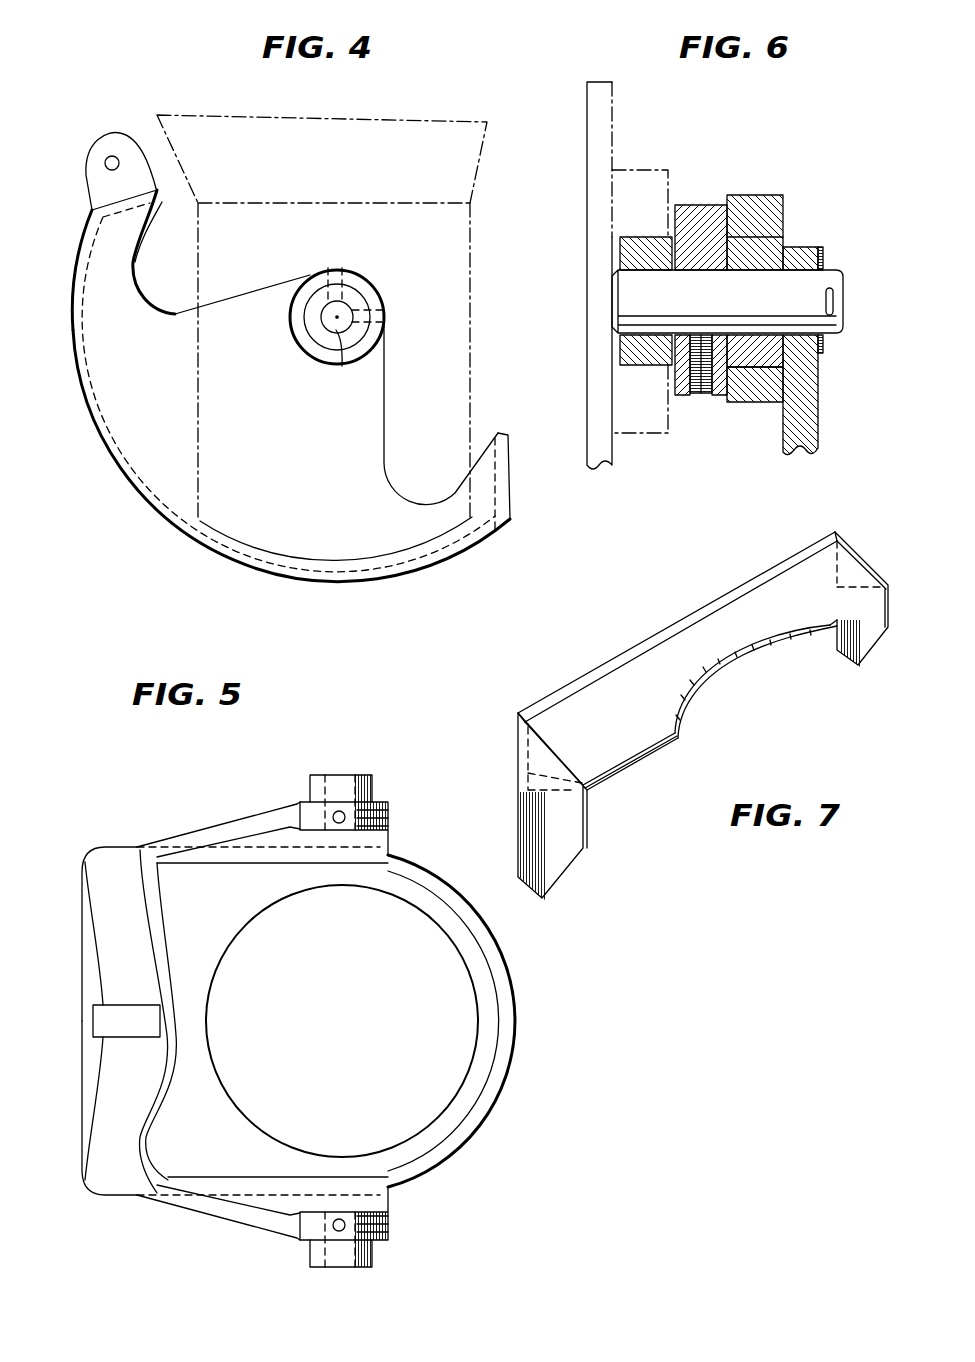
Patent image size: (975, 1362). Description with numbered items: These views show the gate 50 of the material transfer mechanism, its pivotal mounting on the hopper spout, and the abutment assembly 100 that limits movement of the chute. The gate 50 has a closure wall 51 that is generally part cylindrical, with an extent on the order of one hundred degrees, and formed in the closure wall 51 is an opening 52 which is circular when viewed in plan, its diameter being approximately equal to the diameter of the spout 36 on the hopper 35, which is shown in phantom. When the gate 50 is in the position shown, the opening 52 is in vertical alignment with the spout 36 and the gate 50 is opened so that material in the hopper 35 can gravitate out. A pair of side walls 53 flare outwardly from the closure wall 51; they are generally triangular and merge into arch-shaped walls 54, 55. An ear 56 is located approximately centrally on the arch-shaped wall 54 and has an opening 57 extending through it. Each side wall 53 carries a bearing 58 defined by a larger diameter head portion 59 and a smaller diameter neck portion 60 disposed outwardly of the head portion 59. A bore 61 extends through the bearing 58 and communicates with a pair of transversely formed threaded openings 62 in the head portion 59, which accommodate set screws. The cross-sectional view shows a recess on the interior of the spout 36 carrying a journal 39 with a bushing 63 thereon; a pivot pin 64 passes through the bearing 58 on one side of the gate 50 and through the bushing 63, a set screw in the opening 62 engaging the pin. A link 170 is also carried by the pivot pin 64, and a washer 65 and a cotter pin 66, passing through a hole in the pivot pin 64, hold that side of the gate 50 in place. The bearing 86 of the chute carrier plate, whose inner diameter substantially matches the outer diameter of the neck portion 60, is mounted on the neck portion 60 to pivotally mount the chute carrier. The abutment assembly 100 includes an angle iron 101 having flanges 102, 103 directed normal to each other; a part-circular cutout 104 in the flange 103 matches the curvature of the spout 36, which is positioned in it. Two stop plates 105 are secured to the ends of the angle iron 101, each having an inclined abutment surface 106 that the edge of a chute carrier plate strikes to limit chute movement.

In FIG. 4, the hopper 35 is at (398, 140).
In FIG. 6, the hopper 35 is at (607, 115).
In FIG. 4, the spout 36 is at (462, 270).
In FIG. 6, the journal 39 is at (653, 180).
In FIG. 4, the gate 50 is at (386, 392).
In FIG. 5, the gate 50 is at (413, 802).
In FIG. 4, the closure wall 51 is at (128, 483).
In FIG. 5, the closure wall 51 is at (196, 912).
In FIG. 4, the opening 52 is at (203, 557).
In FIG. 5, the opening 52 is at (248, 923).
In FIG. 4, the side walls 53 is at (300, 430).
In FIG. 5, the side walls 53 is at (275, 835).
In FIG. 4, the arch-shaped wall 54 is at (510, 480).
In FIG. 5, the arch-shaped wall 54 is at (510, 993).
In FIG. 4, the arch-shaped wall 55 is at (90, 232).
In FIG. 5, the arch-shaped wall 55 is at (122, 963).
In FIG. 4, the ear 56 is at (135, 155).
In FIG. 5, the ear 56 is at (108, 1030).
In FIG. 4, the opening 57 is at (110, 156).
In FIG. 4, the bearing 58 is at (368, 277).
In FIG. 6, the bearing 58 is at (722, 400).
In FIG. 5, the bearing 58 is at (374, 788).
In FIG. 4, the head portion 59 is at (352, 272).
In FIG. 6, the head portion 59 is at (705, 212).
In FIG. 5, the head portion 59 is at (310, 800).
In FIG. 4, the neck portion 60 is at (355, 300).
In FIG. 6, the neck portion 60 is at (782, 245).
In FIG. 5, the neck portion 60 is at (316, 785).
In FIG. 4, the bore 61 is at (343, 356).
In FIG. 5, the bore 61 is at (332, 793).
In FIG. 4, the threaded openings 62 is at (333, 265).
In FIG. 6, the threaded openings 62 is at (702, 397).
In FIG. 5, the threaded openings 62 is at (345, 823).
In FIG. 6, the bushing 63 is at (643, 247).
In FIG. 6, the pivot pin 64 is at (830, 272).
In FIG. 6, the washer 65 is at (825, 343).
In FIG. 6, the cotter pin 66 is at (833, 300).
In FIG. 6, the bearing 86 is at (765, 387).
In FIG. 6, the link 170 is at (797, 252).
In FIG. 7, the abutment assembly 100 is at (570, 630).
In FIG. 7, the angle iron 101 is at (604, 661).
In FIG. 7, the flange 102 is at (673, 637).
In FIG. 7, the flange 103 is at (622, 733).
In FIG. 7, the part-circular cutout 104 is at (735, 655).
In FIG. 7, the stop plates 105 is at (862, 548).
In FIG. 7, the abutment surface 106 is at (567, 865).